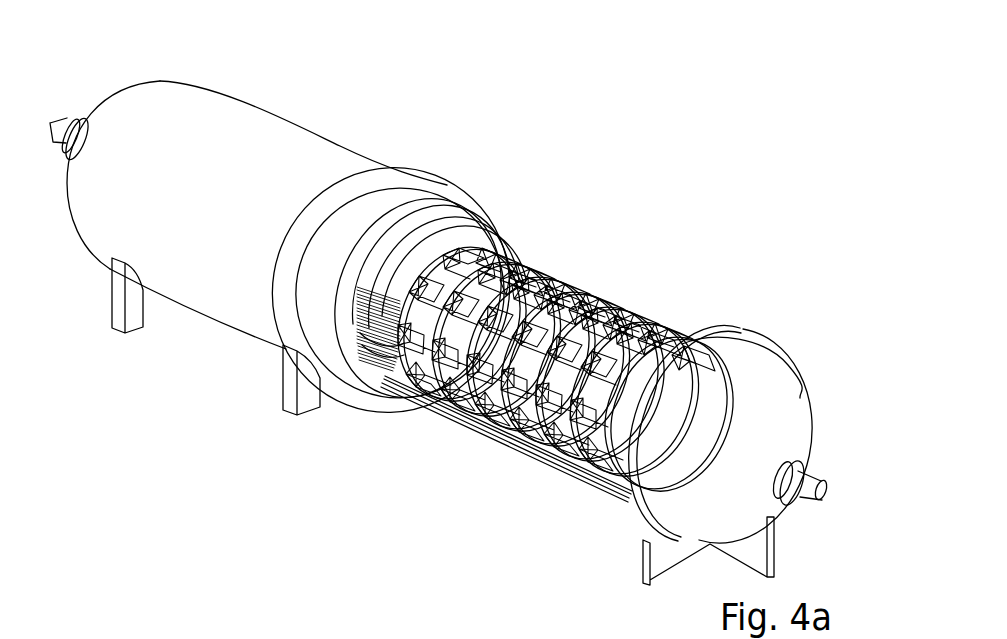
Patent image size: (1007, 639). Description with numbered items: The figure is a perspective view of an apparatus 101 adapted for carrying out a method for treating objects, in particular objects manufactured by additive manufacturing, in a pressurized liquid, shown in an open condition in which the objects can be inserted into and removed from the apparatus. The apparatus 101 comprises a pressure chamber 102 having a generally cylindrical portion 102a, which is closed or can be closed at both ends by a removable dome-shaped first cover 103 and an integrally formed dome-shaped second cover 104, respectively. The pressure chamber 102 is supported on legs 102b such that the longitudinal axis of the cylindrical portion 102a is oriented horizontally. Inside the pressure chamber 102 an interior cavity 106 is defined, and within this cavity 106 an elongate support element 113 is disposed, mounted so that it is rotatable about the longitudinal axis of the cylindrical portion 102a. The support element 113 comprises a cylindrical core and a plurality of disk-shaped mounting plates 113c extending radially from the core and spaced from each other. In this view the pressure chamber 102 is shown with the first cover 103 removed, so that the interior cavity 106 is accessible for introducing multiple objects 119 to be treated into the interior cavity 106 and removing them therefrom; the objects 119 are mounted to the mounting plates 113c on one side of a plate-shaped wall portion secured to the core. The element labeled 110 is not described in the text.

The apparatus 101 is at (450, 132).
The pressure chamber 102 is at (215, 73).
The cylindrical portion 102a is at (235, 118).
The legs 102b is at (132, 325).
The first cover 103 is at (785, 407).
The second cover 104 is at (133, 102).
The interior cavity 106 is at (446, 229).
The internal baffle 110 is at (378, 363).
The support element 113 is at (648, 297).
The mounting plates 113c is at (582, 292).
The objects 119 is at (690, 340).